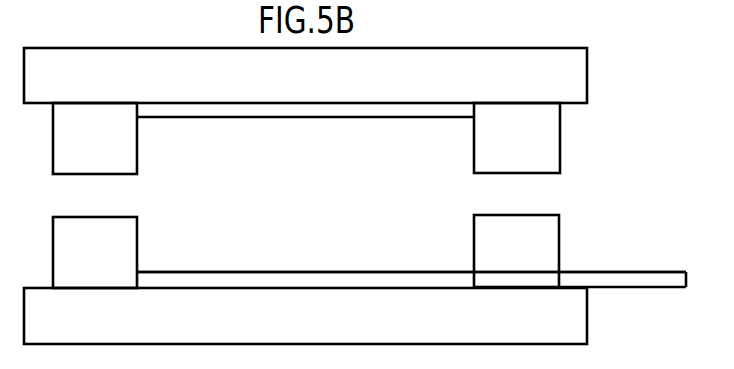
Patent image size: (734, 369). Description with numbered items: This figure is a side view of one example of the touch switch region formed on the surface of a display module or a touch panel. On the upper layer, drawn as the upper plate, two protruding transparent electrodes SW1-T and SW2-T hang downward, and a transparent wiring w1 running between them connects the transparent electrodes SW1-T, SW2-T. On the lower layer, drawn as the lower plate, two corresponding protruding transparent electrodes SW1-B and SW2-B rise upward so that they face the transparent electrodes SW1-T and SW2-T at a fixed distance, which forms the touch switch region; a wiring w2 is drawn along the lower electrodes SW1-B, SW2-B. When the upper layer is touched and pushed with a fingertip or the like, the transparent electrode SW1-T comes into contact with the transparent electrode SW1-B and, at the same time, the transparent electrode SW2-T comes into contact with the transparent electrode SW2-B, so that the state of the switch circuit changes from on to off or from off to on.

The protruding transparent electrode SW1-T is at (95, 138).
The protruding transparent electrode SW2-T is at (517, 138).
The protruding transparent electrode SW1-B is at (95, 252).
The protruding transparent electrode SW2-B is at (516, 251).
The transparent wiring w1 is at (305, 137).
The second waveguide w2 is at (411, 259).